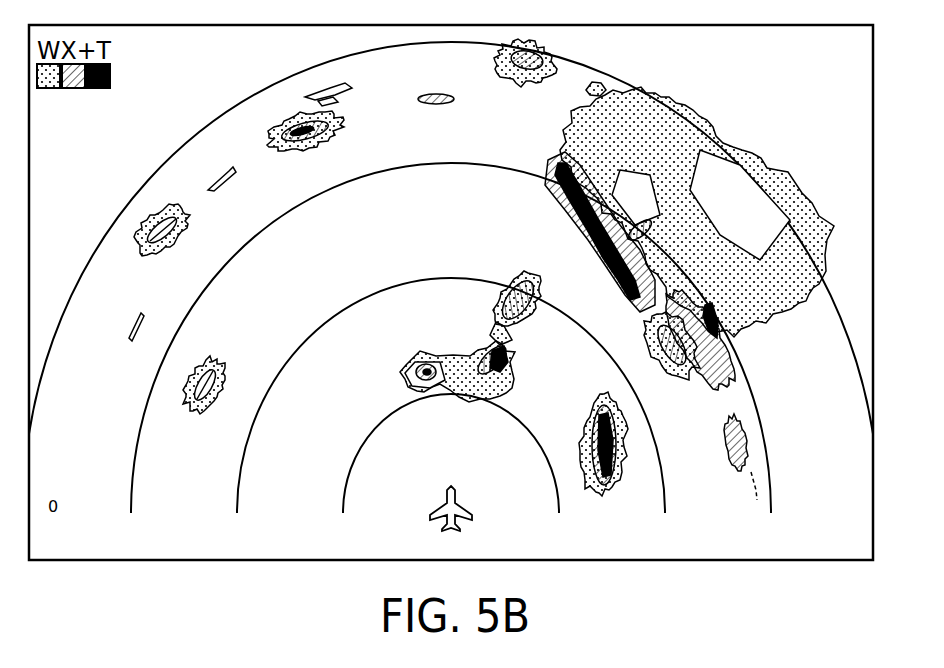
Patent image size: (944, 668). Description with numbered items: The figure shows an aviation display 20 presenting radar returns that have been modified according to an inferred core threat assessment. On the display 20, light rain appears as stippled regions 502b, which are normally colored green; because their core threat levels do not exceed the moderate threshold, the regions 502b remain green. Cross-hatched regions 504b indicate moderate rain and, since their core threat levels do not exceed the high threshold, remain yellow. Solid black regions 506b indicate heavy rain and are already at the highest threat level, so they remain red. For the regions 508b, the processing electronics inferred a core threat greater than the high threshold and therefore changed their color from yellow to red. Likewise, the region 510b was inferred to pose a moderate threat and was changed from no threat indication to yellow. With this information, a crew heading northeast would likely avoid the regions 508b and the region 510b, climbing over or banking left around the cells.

The aviation display 20 is at (70, 561).
The regions with light rain (green) 502b is at (655, 150).
The regions with moderate rain (yellow) 504b is at (735, 336).
The regions with heavy rain (red) 506b is at (505, 384).
The regions changed from yellow to red 508b is at (563, 165).
The region changed to yellow 510b is at (652, 318).